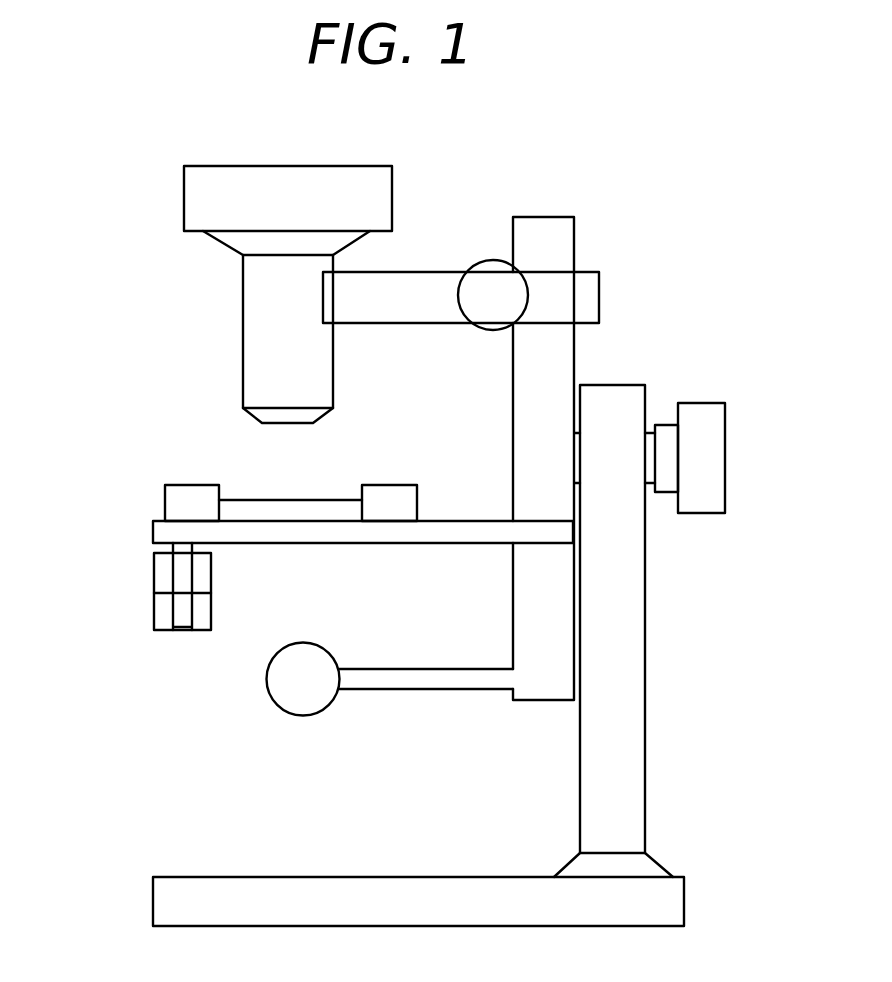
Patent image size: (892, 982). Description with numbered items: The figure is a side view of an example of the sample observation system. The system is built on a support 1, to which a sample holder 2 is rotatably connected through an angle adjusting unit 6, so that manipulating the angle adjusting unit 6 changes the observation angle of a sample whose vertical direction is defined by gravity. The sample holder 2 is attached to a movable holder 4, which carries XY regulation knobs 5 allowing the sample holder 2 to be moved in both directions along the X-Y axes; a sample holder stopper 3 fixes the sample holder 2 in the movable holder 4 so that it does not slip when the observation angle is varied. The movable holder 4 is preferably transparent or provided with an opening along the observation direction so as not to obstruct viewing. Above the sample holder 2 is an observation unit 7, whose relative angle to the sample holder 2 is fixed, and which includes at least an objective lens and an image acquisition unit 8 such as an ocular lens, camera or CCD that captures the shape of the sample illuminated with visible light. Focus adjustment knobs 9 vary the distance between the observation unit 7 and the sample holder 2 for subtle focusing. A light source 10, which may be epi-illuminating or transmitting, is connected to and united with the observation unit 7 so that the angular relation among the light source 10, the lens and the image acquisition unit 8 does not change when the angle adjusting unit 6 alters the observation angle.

The support 1 is at (632, 728).
The sample holder 2 is at (287, 507).
The sample holder stopper 3 is at (175, 505).
The movable holder 4 is at (165, 533).
The XY regulation knobs 5 is at (158, 610).
The angle adjusting unit 6 is at (717, 448).
The observation unit 7 is at (255, 323).
The image acquisition unit 8 is at (195, 197).
The focus adjustment knobs 9 is at (486, 261).
The light source 10 is at (273, 680).